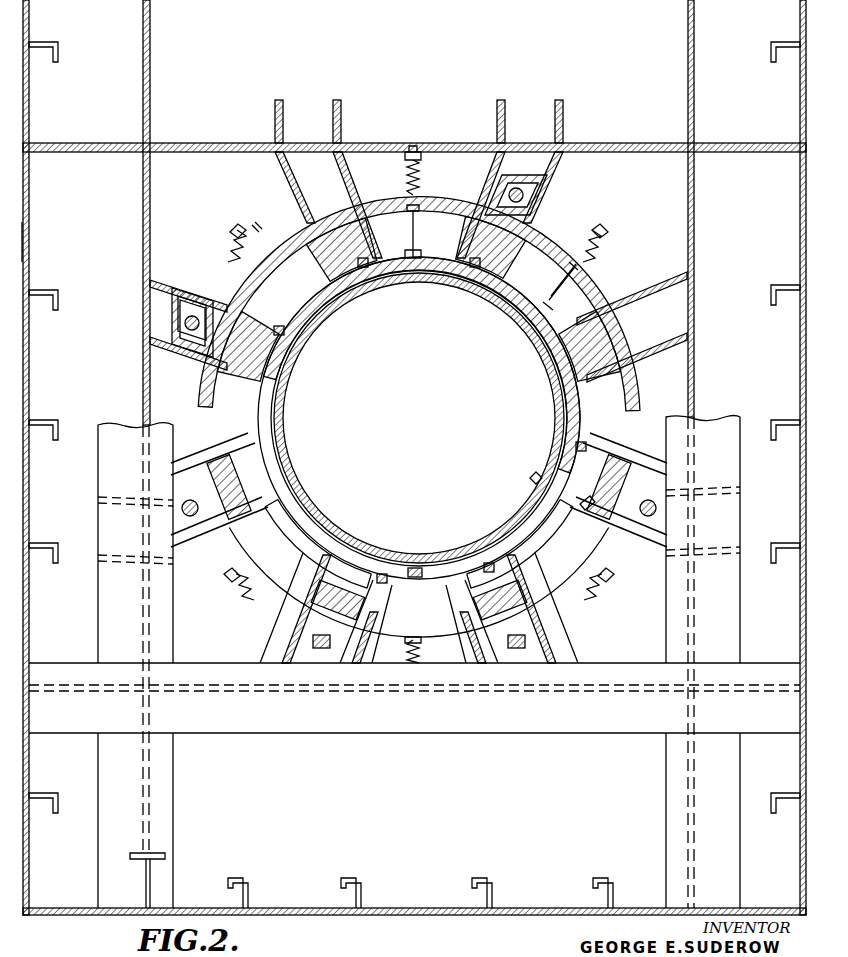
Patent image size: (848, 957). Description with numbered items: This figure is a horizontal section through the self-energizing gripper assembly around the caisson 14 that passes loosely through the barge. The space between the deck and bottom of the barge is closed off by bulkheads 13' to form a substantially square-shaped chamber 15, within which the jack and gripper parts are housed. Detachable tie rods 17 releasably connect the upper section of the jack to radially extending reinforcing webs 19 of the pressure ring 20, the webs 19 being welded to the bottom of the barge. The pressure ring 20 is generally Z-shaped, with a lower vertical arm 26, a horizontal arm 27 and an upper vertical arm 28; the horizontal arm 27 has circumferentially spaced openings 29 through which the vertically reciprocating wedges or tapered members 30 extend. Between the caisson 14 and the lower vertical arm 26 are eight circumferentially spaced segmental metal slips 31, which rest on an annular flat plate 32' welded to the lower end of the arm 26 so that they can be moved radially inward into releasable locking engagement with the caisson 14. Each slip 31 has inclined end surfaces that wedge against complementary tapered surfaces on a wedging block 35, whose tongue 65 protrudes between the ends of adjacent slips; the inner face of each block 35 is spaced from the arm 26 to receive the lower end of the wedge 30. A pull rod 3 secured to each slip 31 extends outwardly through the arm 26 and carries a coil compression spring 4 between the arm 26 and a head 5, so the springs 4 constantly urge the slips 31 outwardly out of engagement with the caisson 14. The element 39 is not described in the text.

The bulkheads 13' is at (414, 457).
The chamber 15 is at (421, 915).
The caisson 14 is at (290, 357).
The segmental metal grippers or slips 31 is at (415, 270).
The wedges or tapered members 30 is at (345, 228).
The wedging block 35 is at (385, 560).
The tongue 65 is at (312, 283).
The pull rod 3 is at (415, 228).
The coil compression spring 4 is at (420, 178).
The head 5 is at (406, 160).
The detachable tie rods 17 is at (492, 190).
The radially extending reinforcing webs 19 is at (288, 190).
The pressure ring 20 is at (281, 244).
The lower vertical arm 26 is at (576, 278).
The horizontal arm 27 is at (426, 640).
The upper vertical arm 28 is at (537, 510).
The openings 29 is at (586, 512).
The annular flat plate 32' is at (209, 300).
The lower diagonal strut 39 is at (212, 470).